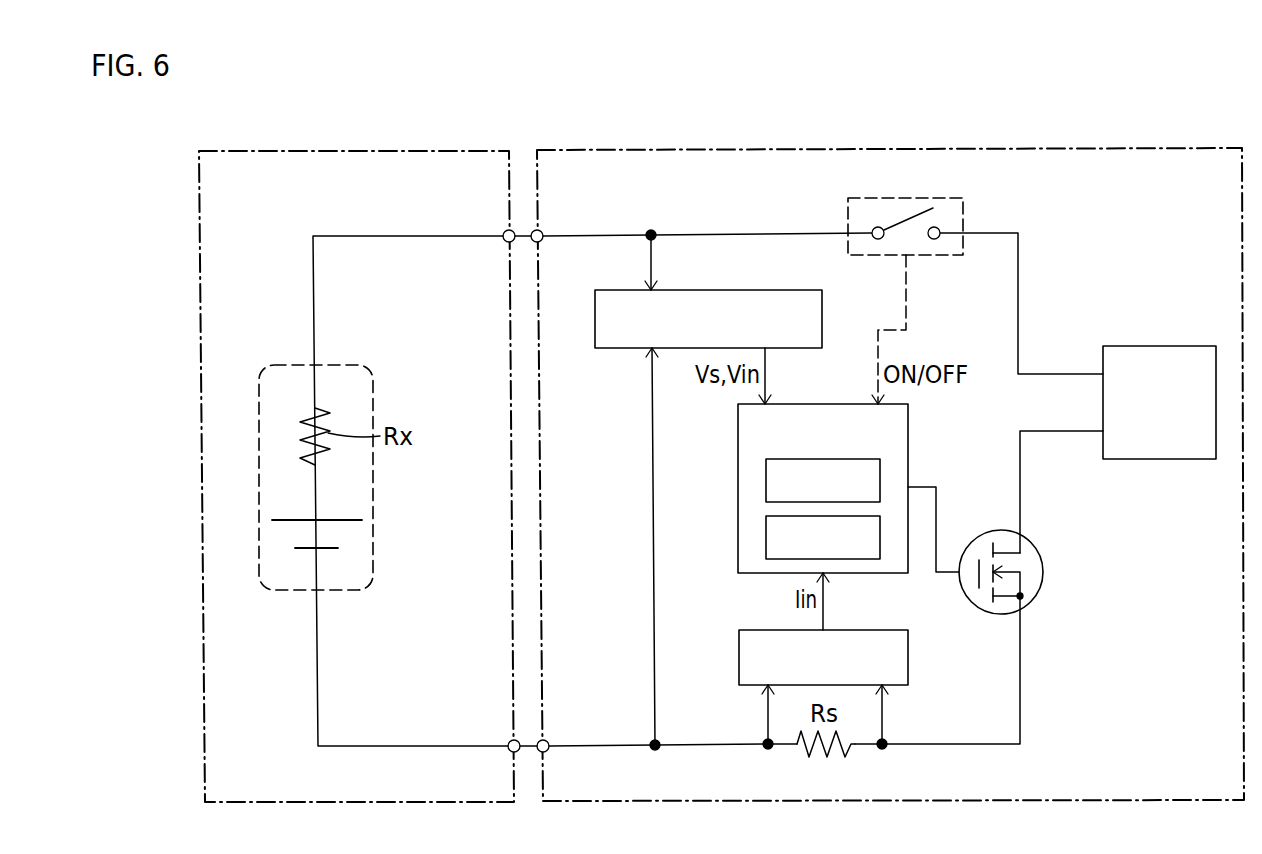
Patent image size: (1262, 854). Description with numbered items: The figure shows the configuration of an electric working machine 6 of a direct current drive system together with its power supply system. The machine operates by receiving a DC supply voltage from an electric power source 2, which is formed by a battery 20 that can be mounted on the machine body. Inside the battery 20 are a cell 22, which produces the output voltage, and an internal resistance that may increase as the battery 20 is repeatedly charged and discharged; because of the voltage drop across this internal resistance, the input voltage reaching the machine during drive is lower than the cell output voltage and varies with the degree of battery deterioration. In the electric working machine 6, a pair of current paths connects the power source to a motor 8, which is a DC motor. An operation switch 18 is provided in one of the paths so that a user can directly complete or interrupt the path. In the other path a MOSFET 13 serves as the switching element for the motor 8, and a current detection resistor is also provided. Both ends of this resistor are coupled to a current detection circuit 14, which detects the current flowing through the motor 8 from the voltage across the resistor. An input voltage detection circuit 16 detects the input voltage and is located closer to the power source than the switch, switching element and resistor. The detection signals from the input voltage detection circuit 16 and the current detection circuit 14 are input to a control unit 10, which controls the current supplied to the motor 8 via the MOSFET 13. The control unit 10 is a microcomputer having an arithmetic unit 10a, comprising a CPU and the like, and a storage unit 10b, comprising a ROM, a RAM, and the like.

The electric power source 2 is at (382, 150).
The electric working machine 6 is at (892, 148).
The motor 8 is at (1158, 346).
The control unit 10 is at (908, 430).
The arithmetic unit 10a is at (766, 537).
The storage unit 10b is at (766, 480).
The MOSFET 13 is at (1050, 571).
The current detection circuit 14 is at (886, 629).
The input voltage detection circuit 16 is at (707, 290).
The operation switch 18 is at (943, 198).
The battery 20 is at (342, 364).
The cell 22 is at (352, 535).